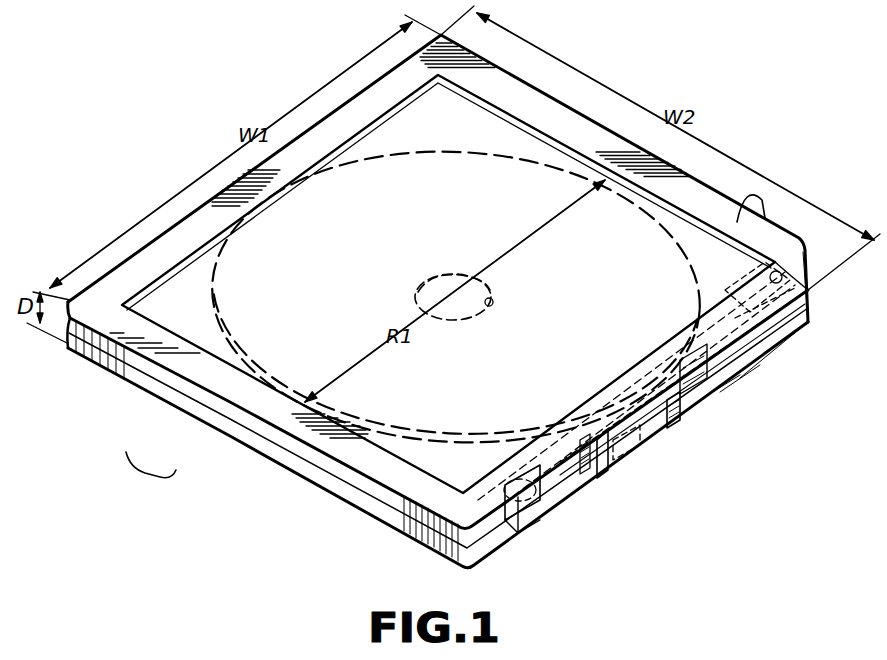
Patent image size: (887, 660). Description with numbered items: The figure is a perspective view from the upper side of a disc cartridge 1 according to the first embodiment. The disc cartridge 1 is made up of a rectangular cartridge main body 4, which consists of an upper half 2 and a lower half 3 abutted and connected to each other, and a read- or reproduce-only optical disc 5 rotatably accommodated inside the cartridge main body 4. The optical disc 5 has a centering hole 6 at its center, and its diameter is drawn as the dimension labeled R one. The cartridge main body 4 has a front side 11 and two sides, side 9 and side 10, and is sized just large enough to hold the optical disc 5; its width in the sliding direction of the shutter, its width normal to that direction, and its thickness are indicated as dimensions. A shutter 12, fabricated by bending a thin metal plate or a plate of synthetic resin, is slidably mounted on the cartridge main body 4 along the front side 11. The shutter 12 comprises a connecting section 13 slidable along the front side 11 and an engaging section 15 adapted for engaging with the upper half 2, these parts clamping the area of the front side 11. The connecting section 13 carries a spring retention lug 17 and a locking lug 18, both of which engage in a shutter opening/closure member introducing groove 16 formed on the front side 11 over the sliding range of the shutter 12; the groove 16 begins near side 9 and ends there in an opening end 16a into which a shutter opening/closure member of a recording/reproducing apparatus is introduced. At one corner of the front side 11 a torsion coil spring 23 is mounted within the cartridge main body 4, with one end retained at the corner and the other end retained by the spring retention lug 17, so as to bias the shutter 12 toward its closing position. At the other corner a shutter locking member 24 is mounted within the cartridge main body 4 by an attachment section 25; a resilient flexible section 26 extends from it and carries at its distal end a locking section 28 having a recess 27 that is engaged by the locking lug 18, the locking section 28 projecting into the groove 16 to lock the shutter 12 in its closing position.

The disc cartridge 1 is at (323, 480).
The upper half 2 is at (173, 383).
The lower half 3 is at (205, 410).
The cartridge main body 4 is at (151, 478).
The optical disc 5 is at (302, 393).
The centering hole 6 is at (495, 302).
The side 9 is at (740, 208).
The side 10 is at (382, 515).
The front side 11 is at (517, 535).
The shutter 12 is at (645, 440).
The connecting section 13 is at (657, 427).
The engaging section 15 is at (590, 470).
The shutter opening/closure member introducing groove 16 is at (747, 373).
The opening end 16a is at (808, 313).
The spring retention lug 17 is at (622, 453).
The locking lug 18 is at (690, 405).
The torsion coil spring 23 is at (505, 523).
The shutter locking member 24 is at (772, 338).
The attachment section 25 is at (788, 284).
The resilient flexible section 26 is at (727, 387).
The recess 27 is at (683, 427).
The locking section 28 is at (712, 395).